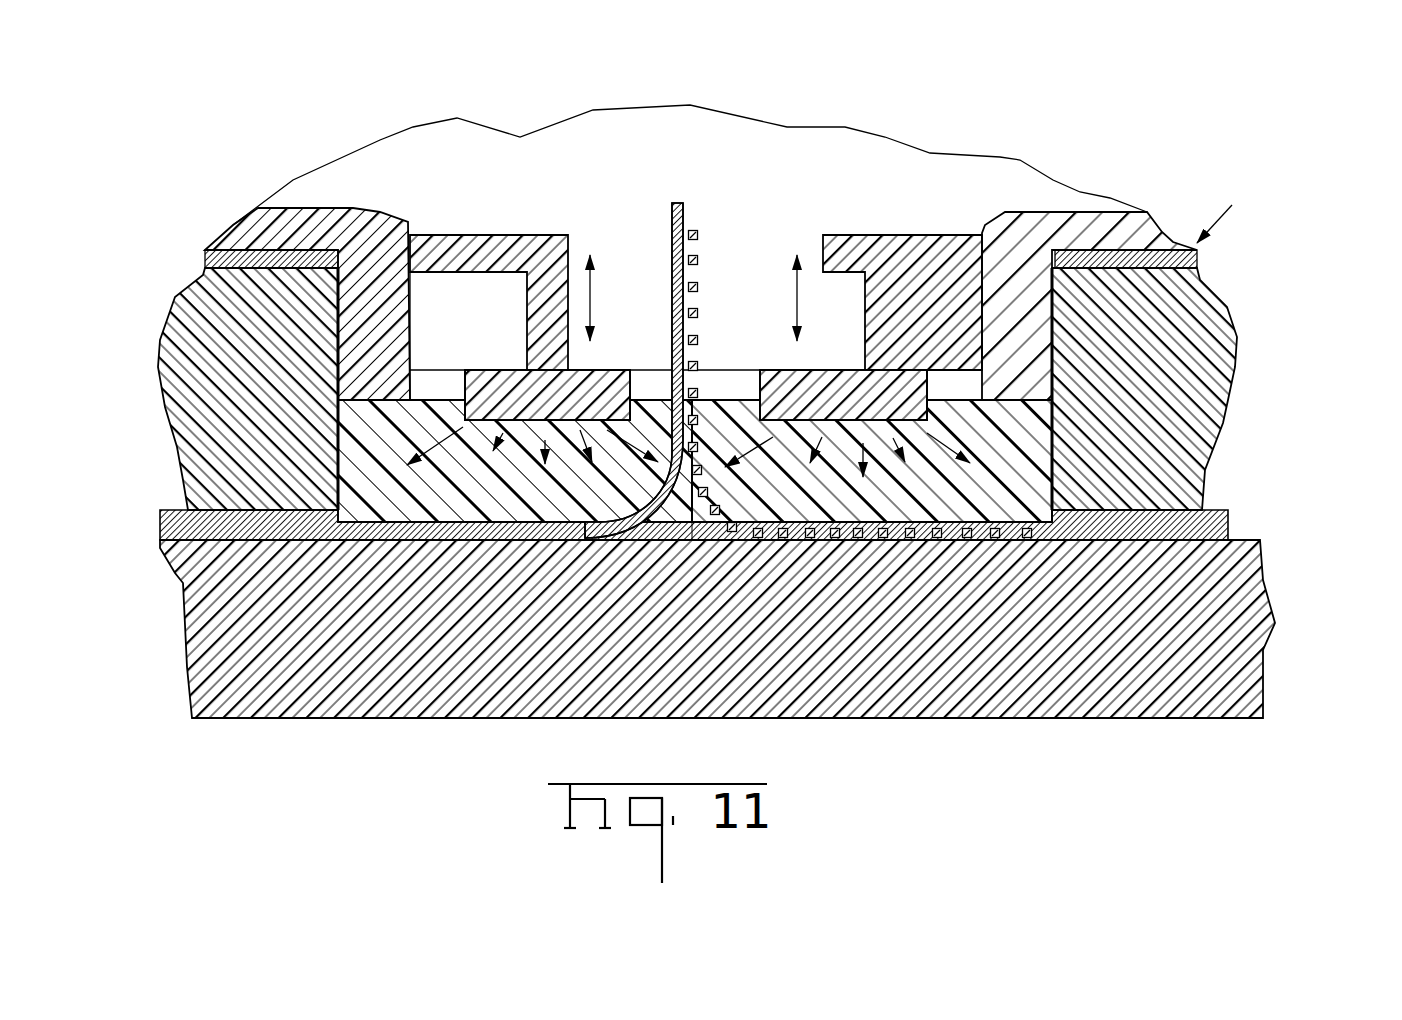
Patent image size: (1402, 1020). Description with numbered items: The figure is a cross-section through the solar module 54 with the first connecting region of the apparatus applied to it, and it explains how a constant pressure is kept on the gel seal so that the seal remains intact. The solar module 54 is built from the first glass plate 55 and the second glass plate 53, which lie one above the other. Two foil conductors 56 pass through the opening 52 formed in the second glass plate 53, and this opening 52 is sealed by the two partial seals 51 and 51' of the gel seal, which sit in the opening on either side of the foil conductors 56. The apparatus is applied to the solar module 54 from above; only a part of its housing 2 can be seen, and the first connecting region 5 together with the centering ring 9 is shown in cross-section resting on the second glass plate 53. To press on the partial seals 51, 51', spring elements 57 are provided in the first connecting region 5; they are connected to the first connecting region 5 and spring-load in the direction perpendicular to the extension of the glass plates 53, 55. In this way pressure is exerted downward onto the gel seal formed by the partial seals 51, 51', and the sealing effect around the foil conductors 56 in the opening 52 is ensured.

The housing 2 is at (1010, 175).
The first connecting region 5 is at (412, 218).
The centering ring 9 is at (385, 395).
The partial seal 51 is at (872, 600).
The partial seal 51' is at (613, 598).
The opening 52 is at (1040, 484).
The second glass plate 53 is at (263, 373).
The solar module 54 is at (1272, 597).
The first glass plate 55 is at (372, 615).
The foil conductor 56 is at (688, 222).
The spring element 57 is at (610, 385).